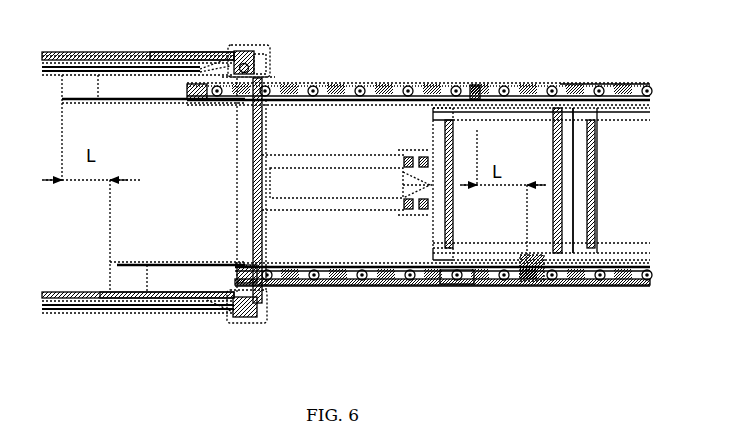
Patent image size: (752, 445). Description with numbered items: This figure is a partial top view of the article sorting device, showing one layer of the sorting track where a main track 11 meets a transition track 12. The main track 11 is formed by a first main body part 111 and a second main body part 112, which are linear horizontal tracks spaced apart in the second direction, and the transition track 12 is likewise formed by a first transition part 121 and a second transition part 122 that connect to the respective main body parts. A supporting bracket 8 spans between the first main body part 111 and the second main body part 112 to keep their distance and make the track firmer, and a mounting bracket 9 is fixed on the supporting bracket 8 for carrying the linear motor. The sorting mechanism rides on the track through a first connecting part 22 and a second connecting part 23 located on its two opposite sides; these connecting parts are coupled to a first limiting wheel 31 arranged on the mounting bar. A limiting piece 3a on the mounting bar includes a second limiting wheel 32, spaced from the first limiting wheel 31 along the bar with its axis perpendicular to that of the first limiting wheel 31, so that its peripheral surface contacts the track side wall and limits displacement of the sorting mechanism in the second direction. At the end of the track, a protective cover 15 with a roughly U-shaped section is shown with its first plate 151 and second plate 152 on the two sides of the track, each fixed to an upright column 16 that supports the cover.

The main track 11 is at (607, 82).
The first main body part 111 is at (327, 284).
The second main body part 112 is at (541, 74).
The transition track 12 is at (72, 54).
The first transition part 121 is at (177, 288).
The second transition part 122 is at (135, 88).
The protective cover 15 is at (73, 299).
The first plate 151 is at (175, 58).
The second plate 152 is at (118, 306).
The upright column 16 is at (247, 62).
The supporting bracket 8 is at (243, 240).
The mounting bracket 9 is at (340, 160).
The first connecting part 22 is at (530, 265).
The second connecting part 23 is at (532, 147).
The first limiting wheel 31 is at (528, 284).
The second limiting wheel 32 is at (455, 280).
The limiting piece 3a is at (402, 85).